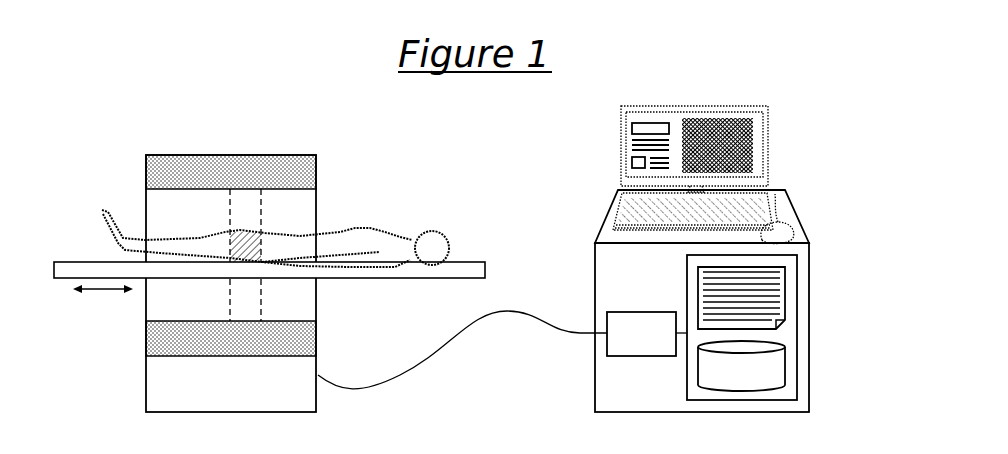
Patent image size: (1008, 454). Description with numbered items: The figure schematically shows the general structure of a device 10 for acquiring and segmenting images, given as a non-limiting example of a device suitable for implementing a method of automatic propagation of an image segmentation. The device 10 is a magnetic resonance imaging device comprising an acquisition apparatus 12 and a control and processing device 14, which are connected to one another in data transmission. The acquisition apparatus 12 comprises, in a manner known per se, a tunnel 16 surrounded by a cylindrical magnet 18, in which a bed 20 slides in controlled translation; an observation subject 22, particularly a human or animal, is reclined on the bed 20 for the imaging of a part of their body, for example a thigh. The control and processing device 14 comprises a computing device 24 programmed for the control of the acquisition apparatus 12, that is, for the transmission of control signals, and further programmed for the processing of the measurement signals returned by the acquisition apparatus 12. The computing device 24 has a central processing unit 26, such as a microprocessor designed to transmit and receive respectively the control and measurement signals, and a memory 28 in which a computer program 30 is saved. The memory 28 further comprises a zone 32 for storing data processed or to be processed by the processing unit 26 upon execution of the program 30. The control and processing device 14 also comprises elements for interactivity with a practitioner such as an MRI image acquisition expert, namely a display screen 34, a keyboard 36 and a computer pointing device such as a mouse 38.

The device for acquiring and segmenting images 10 is at (339, 101).
The acquisition apparatus 12 is at (124, 201).
The control and processing device 14 is at (556, 236).
The tunnel 16 is at (302, 222).
The cylindrical magnet 18 is at (225, 163).
The bed 20 is at (85, 268).
The observation subject 22 is at (328, 245).
The computing device 24 is at (702, 301).
The central processing unit 26 is at (647, 334).
The memory 28 is at (797, 330).
The computer program 30 is at (787, 293).
The zone for storing data 32 is at (741, 366).
The display screen 34 is at (675, 122).
The keyboard 36 is at (627, 205).
The mouse 38 is at (780, 233).